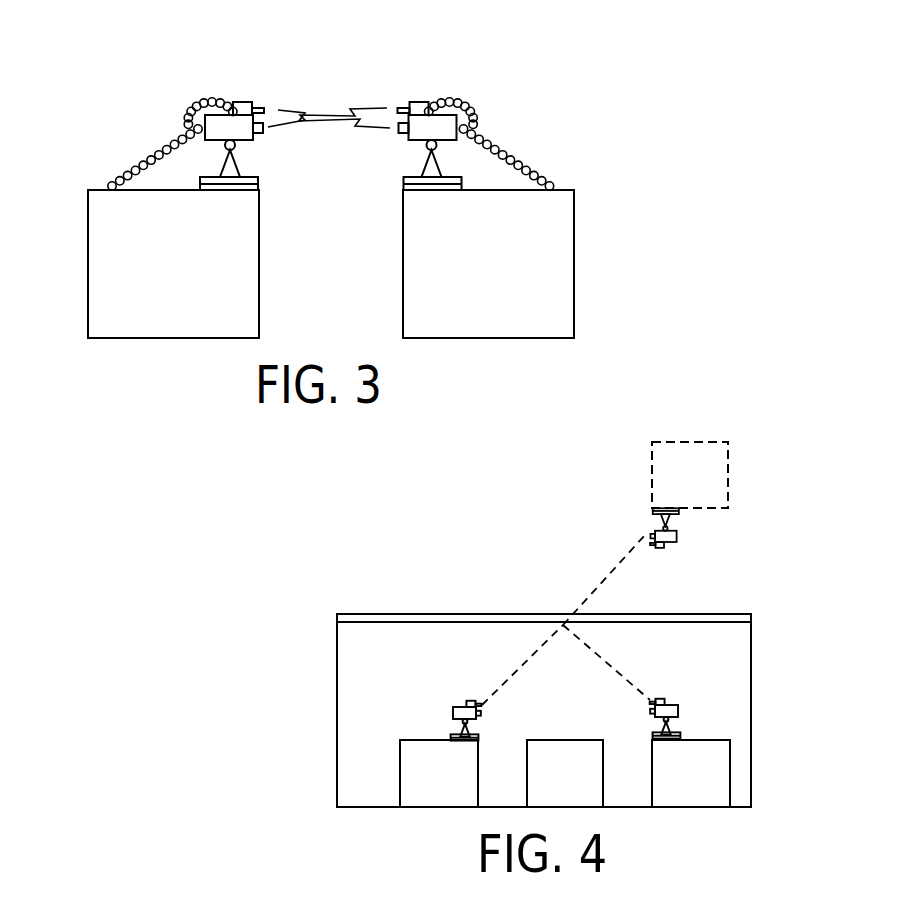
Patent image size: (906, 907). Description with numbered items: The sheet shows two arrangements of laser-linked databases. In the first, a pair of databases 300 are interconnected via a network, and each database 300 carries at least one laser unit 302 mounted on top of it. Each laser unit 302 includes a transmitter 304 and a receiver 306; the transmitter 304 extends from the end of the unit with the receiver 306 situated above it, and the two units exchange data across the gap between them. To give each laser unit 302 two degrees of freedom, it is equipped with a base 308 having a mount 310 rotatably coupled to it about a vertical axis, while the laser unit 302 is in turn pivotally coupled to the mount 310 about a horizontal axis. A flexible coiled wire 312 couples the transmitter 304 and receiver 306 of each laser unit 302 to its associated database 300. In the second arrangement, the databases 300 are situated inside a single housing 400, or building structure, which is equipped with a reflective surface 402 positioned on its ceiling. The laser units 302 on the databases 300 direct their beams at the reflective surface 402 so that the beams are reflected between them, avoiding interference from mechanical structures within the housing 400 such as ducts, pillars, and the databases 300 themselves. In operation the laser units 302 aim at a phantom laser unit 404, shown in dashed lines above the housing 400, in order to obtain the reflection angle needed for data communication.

In FIG. 3, the database 300 is at (98, 298).
In FIG. 4, the database 300 is at (720, 780).
In FIG. 3, the laser unit 302 is at (183, 76).
In FIG. 4, the laser unit 302 is at (678, 711).
In FIG. 3, the transmitter 304 is at (262, 133).
In FIG. 3, the receiver 306 is at (252, 73).
In FIG. 3, the base 308 is at (236, 192).
In FIG. 3, the mount 310 is at (200, 178).
In FIG. 3, the flexible coiled wire 312 is at (135, 163).
In FIG. 4, the housing 400 is at (355, 604).
In FIG. 4, the reflective surface 402 is at (398, 622).
In FIG. 4, the phantom laser unit 404 is at (673, 442).